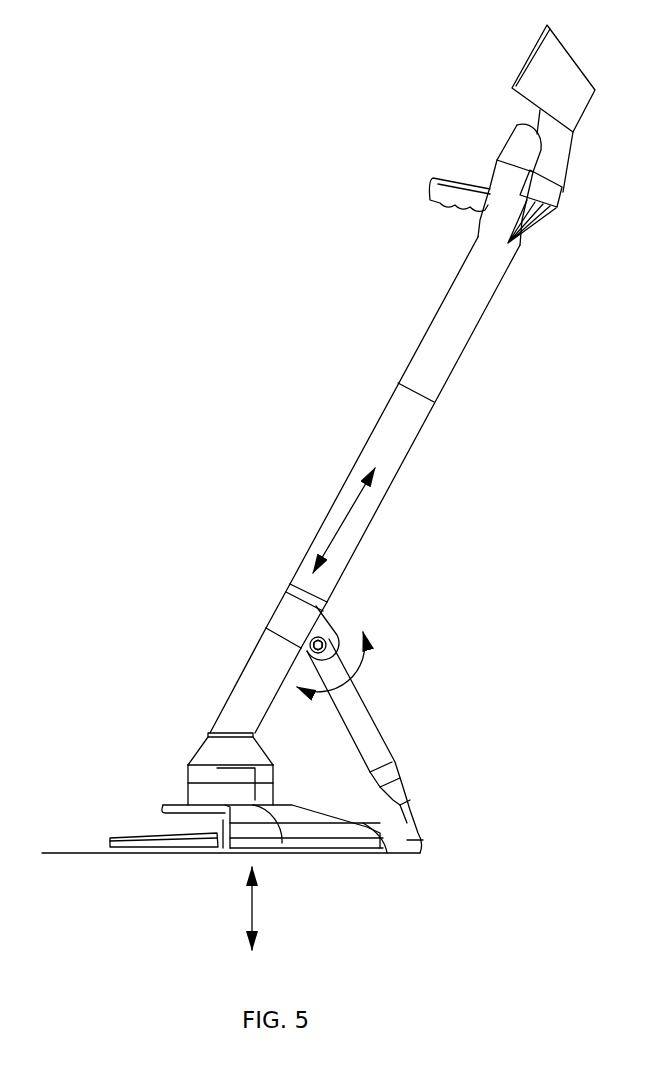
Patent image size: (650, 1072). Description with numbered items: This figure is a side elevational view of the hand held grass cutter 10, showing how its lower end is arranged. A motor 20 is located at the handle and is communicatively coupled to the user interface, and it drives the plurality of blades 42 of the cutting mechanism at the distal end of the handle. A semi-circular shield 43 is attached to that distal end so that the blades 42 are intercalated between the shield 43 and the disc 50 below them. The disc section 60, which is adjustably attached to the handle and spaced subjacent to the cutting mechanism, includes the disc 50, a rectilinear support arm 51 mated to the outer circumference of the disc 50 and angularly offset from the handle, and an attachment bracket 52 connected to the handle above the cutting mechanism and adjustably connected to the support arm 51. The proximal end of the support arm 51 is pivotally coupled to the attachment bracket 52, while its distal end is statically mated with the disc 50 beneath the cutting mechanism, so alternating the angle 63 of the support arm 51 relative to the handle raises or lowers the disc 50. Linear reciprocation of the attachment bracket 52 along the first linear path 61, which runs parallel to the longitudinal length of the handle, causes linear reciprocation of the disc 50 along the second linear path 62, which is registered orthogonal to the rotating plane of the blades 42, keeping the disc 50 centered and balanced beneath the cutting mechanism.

The hand held grass cutter 10 is at (337, 217).
The motor 20 is at (213, 770).
The blades 42 is at (143, 843).
The shield 43 is at (323, 833).
The disc 50 is at (73, 855).
The support arm 51 is at (372, 740).
The attachment bracket 52 is at (288, 620).
The disc section 60 is at (425, 782).
The first linear path 61 is at (345, 518).
The second linear path 62 is at (252, 910).
The angle 63 is at (343, 679).